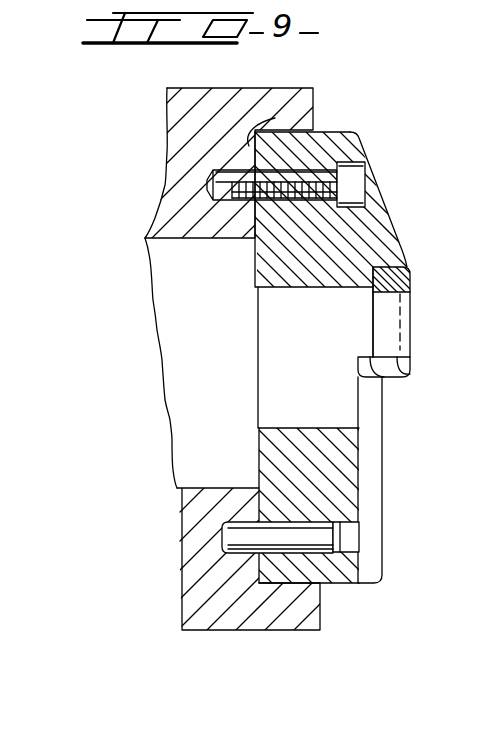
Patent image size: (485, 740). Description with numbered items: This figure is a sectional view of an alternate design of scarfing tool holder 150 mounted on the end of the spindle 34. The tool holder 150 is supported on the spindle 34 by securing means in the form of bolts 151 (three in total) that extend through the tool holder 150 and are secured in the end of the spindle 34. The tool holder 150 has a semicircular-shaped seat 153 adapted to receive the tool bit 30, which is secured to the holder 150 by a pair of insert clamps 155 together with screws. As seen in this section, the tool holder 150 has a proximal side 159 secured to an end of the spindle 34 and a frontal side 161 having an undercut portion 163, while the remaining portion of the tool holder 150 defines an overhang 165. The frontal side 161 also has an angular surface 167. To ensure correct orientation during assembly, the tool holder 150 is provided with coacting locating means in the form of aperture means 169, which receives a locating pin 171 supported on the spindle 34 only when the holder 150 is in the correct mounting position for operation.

The spindle 34 is at (276, 96).
The tool holder 150 is at (265, 259).
The bolts 151 is at (352, 185).
The seat 153 is at (397, 275).
The insert clamps 155 is at (405, 366).
The proximal side 159 is at (275, 118).
The frontal side 161 is at (366, 143).
The undercut portion 163 is at (382, 484).
The overhang 165 is at (396, 380).
The angular surface 167 is at (388, 217).
The aperture means 169 is at (343, 548).
The locating pin 171 is at (313, 535).
The tool bit 30 is at (400, 280).